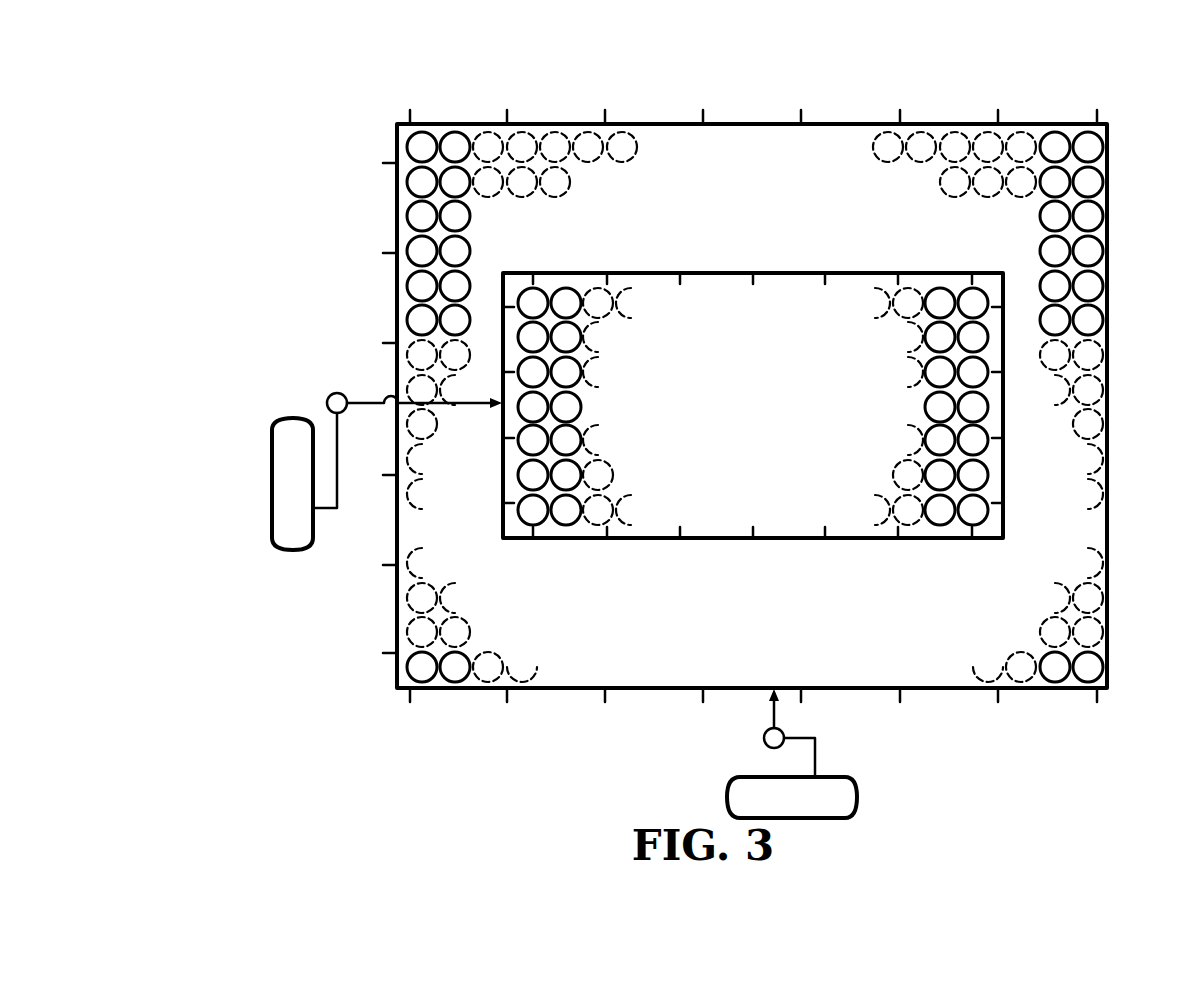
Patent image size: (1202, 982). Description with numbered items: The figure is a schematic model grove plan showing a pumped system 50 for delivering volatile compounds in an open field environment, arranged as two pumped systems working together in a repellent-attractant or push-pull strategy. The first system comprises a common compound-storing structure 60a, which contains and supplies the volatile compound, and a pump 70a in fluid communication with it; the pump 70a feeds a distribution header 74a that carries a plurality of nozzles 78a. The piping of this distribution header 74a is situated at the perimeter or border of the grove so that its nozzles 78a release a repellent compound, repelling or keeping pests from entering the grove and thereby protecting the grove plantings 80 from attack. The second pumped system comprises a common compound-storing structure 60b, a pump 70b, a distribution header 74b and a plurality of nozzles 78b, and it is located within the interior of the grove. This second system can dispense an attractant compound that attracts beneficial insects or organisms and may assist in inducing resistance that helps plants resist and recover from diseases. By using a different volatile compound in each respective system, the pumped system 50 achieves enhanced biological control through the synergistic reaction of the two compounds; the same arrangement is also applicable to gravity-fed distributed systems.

The pumped system 50 is at (310, 132).
The common compound-storing structure 60a is at (852, 767).
The common compound-storing structure 60b is at (264, 492).
The pump 70a is at (752, 738).
The pump 70b is at (337, 385).
The distribution header 74a is at (634, 124).
The distribution header 74b is at (610, 273).
The nozzles 78a is at (997, 119).
The nozzles 78b is at (902, 283).
The grove plantings 80 is at (1090, 193).